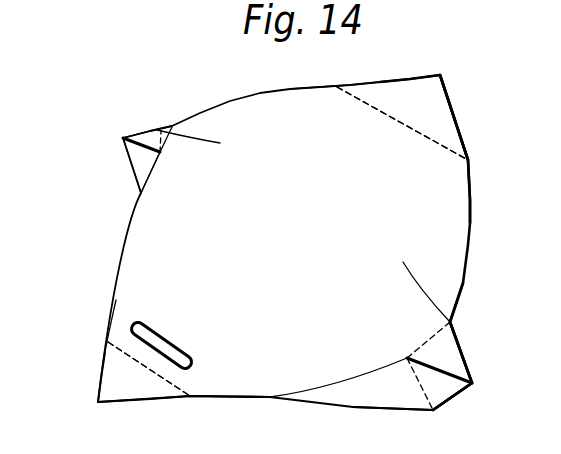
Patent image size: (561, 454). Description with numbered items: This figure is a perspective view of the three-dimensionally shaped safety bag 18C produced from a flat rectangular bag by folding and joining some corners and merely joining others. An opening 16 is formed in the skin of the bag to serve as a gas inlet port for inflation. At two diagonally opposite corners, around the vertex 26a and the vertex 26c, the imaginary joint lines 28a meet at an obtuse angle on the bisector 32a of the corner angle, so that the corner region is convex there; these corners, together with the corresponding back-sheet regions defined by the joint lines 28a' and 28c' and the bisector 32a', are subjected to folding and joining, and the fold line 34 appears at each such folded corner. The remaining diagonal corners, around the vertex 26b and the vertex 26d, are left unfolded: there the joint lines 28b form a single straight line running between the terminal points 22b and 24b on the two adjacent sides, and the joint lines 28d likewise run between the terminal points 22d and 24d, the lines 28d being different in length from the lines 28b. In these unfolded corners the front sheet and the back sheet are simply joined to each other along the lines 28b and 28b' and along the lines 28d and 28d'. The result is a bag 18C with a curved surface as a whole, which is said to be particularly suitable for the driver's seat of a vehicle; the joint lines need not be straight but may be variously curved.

The safety bag 18C is at (476, 222).
The opening 16 is at (162, 333).
The terminal point 22b is at (337, 87).
The terminal point 22d is at (110, 342).
The terminal point 24b is at (468, 160).
The terminal point 24d is at (193, 395).
The vertex 26a is at (473, 383).
The vertex 26b is at (440, 76).
The vertex 26c is at (122, 138).
The vertex 26d is at (98, 402).
The joint line 28a is at (400, 402).
The joint line of back sheet 28a' is at (371, 329).
The joint line 28b is at (385, 129).
The joint line of back sheet 28b' is at (390, 123).
The joint line of back sheet 28c' is at (173, 133).
The joint line 28d is at (189, 395).
The joint line of back sheet 28d' is at (155, 395).
The bisector 32a is at (431, 414).
The bisector of back sheet 32a' is at (492, 333).
The fold line 34 is at (142, 172).